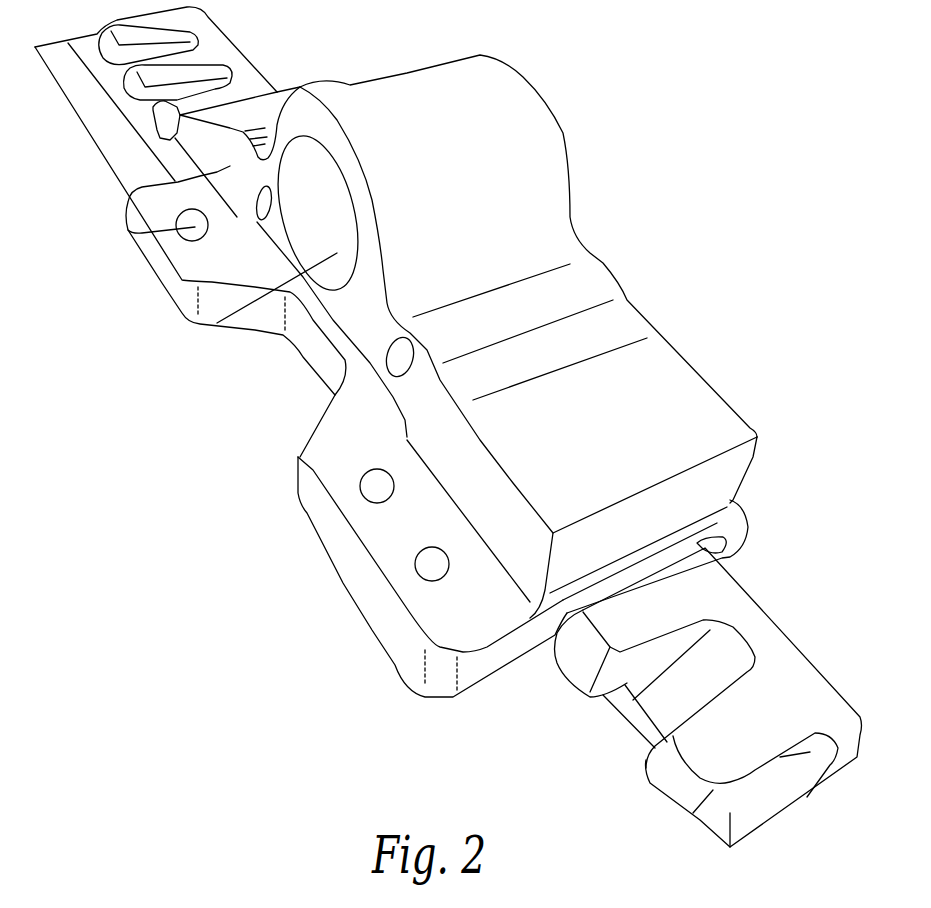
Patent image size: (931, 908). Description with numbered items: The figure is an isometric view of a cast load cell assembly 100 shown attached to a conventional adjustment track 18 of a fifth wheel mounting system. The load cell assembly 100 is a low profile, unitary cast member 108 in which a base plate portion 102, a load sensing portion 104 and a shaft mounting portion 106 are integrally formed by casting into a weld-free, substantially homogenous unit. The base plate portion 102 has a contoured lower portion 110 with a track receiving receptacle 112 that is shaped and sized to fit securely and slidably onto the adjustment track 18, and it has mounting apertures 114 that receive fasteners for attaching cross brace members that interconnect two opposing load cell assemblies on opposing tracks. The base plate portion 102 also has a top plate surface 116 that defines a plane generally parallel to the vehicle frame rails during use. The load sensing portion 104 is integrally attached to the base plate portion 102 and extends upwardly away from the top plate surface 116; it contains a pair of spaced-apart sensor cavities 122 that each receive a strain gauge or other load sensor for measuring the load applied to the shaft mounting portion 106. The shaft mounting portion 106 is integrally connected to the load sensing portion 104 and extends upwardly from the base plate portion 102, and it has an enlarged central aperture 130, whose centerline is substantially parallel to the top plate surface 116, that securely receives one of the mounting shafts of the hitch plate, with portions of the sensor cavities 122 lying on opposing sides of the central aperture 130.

The cast load cell assembly 100 is at (607, 102).
The base plate portion 102 is at (175, 268).
The load sensing portion 104 is at (128, 183).
The shaft mounting portion 106 is at (437, 80).
The cast member 108 is at (524, 91).
The contoured lower portion 110 is at (483, 663).
The track receiving receptacle 112 is at (548, 649).
The mounting apertures 114 is at (125, 232).
The top plate surface 116 is at (343, 473).
The sensor cavity 122 is at (257, 222).
The central aperture 130 is at (217, 323).
The adjustment track 18 is at (582, 690).